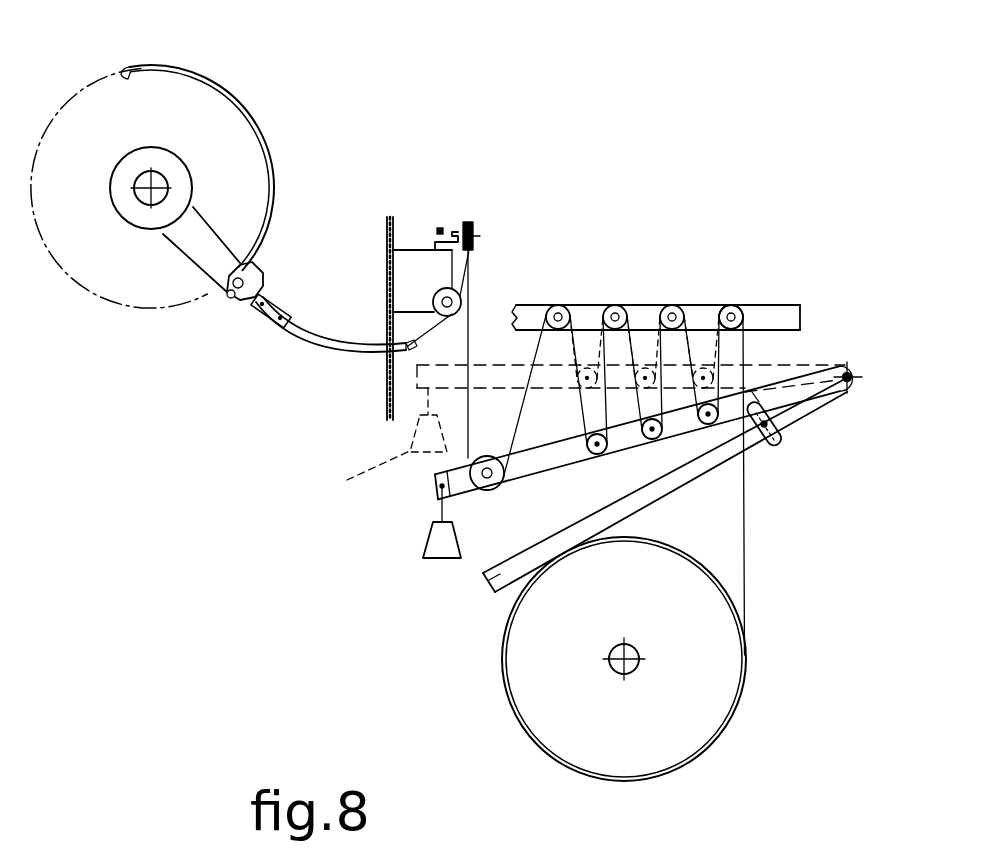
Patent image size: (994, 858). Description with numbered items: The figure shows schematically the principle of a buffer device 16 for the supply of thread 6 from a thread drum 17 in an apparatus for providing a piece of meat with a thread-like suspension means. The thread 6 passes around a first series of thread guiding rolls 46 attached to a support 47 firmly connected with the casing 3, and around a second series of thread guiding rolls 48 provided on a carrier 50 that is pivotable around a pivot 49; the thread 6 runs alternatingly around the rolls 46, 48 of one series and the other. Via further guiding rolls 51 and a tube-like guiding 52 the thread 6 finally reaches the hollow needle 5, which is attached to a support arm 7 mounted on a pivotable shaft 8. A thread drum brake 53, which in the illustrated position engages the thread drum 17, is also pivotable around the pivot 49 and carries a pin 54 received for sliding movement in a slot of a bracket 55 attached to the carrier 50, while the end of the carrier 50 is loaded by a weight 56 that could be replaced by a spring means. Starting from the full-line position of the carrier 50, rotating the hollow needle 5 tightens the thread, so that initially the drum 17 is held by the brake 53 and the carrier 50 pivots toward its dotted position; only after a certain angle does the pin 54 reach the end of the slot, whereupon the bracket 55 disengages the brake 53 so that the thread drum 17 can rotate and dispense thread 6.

The casing 3 is at (387, 237).
The hollow needle 5 is at (166, 66).
The thread 6 is at (121, 81).
The support arm 7 is at (205, 230).
The pivotable shaft 8 is at (160, 183).
The buffer device 16 is at (735, 298).
The thread drum 17 is at (694, 715).
The thread guiding rolls 46 is at (612, 305).
The support 47 is at (764, 308).
The thread guiding rolls 48 is at (501, 486).
The pivot 49 is at (848, 368).
The carrier 50 is at (550, 457).
The further guiding rolls 51 is at (456, 244).
The tube-like guiding 52 is at (333, 353).
The thread drum brake 53 is at (487, 575).
The pin 54 is at (779, 432).
The bracket 55 is at (773, 453).
The weight 56 is at (433, 524).